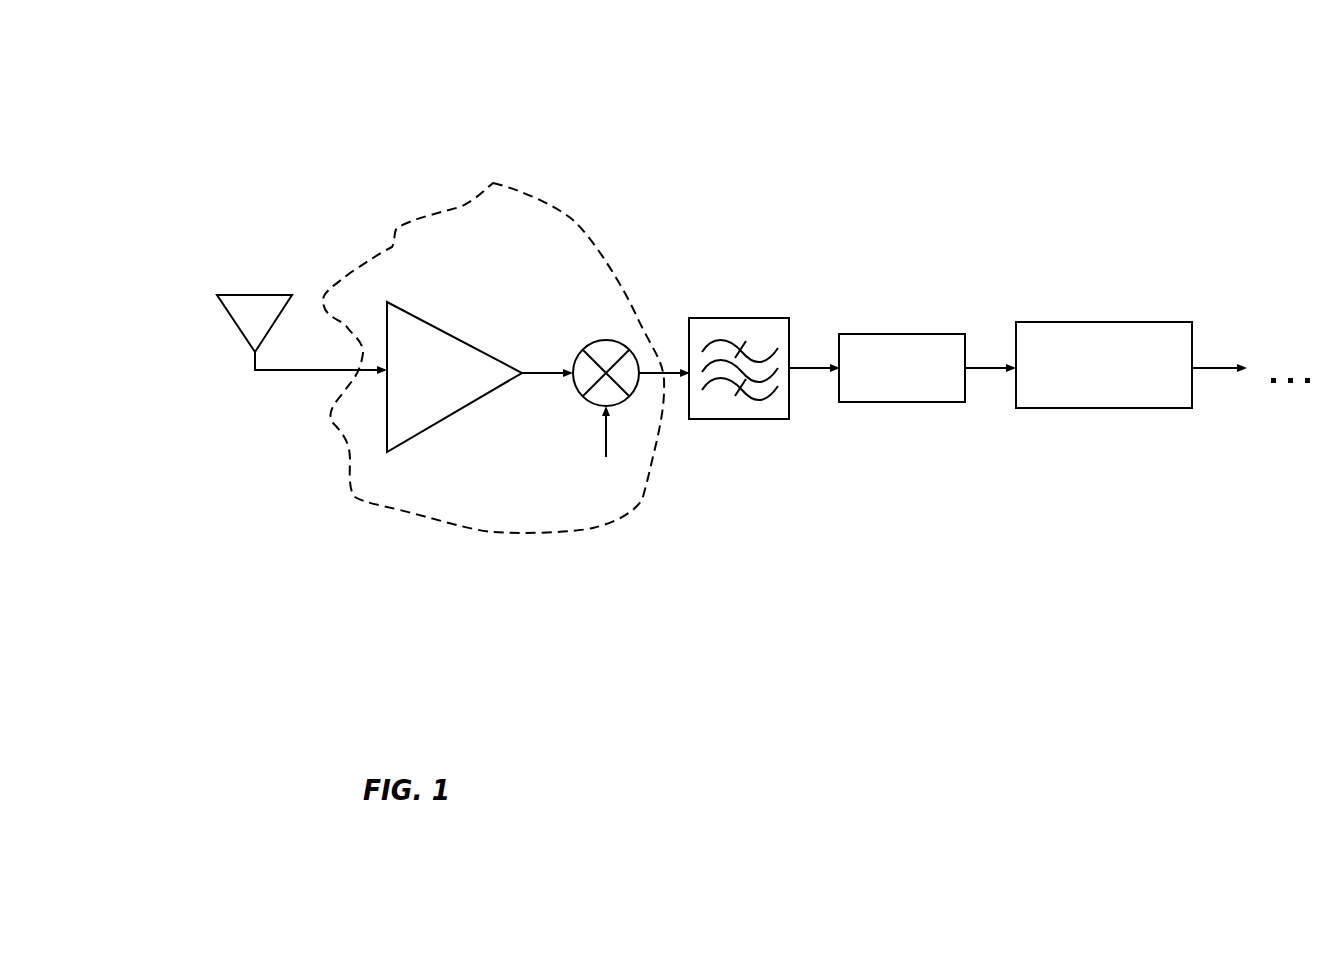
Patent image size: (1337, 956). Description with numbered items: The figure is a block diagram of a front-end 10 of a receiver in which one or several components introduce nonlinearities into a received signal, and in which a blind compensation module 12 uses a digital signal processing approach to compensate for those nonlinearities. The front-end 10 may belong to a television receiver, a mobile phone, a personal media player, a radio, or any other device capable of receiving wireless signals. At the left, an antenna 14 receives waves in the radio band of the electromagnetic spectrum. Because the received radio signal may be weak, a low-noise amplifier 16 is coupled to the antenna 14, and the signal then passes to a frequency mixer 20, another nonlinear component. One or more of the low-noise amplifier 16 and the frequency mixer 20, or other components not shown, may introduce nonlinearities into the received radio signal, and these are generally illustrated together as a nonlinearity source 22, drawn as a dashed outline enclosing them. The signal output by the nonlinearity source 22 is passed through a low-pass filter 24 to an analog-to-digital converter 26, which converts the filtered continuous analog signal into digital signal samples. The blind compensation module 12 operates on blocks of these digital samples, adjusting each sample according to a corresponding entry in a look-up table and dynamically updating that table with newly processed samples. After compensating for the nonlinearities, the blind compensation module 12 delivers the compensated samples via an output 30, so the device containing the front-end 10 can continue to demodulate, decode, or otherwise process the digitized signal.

The front-end 10 is at (771, 114).
The blind compensation module 12 is at (1100, 322).
The antenna 14 is at (278, 295).
The low-noise amplifier (LNA) 16 is at (410, 311).
The frequency mixer 20 is at (607, 338).
The nonlinearity source 22 is at (450, 205).
The low-pass filter (LPF) 24 is at (737, 316).
The analog-to-digital converter (ADC) 26 is at (899, 340).
The output 30 is at (1219, 367).